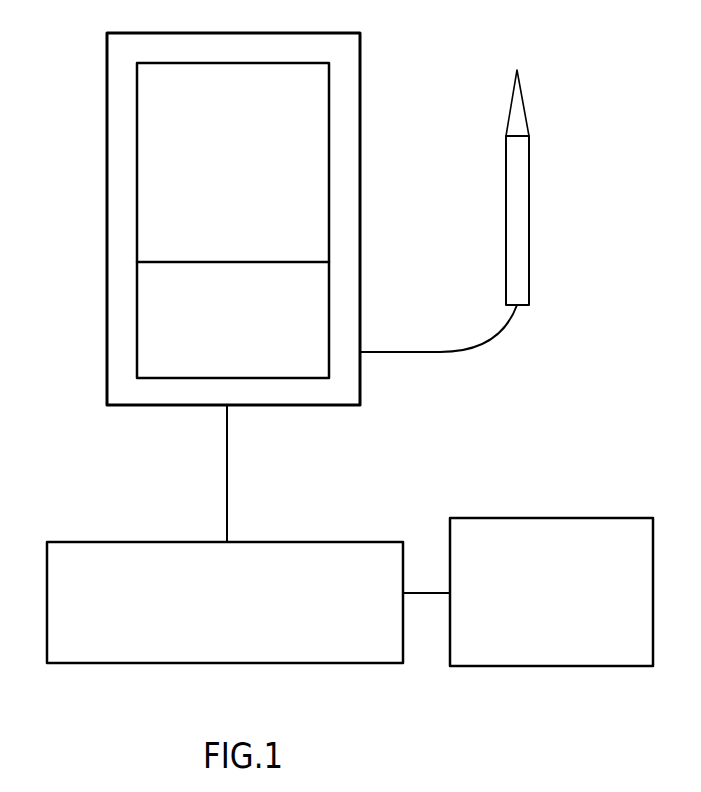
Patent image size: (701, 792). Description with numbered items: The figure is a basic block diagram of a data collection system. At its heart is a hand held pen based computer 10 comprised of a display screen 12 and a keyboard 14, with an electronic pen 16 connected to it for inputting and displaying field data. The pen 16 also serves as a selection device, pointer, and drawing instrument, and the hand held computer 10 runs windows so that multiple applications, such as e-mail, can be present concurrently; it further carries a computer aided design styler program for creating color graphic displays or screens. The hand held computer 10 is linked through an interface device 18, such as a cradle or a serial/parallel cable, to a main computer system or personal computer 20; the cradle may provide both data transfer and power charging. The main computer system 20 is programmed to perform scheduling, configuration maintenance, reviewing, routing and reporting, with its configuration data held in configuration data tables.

The hand held pen based computer 10 is at (107, 220).
The display screen 12 is at (317, 104).
The keyboard 14 is at (147, 355).
The electronic pen 16 is at (506, 217).
The interface device 18 is at (203, 664).
The main computer system 20 is at (553, 667).